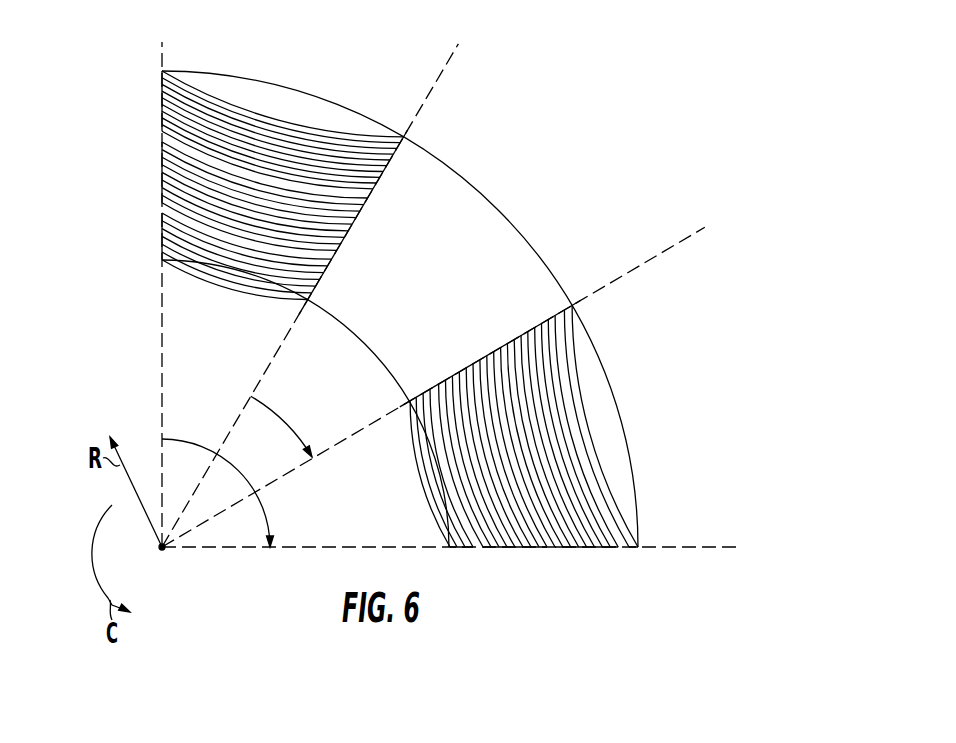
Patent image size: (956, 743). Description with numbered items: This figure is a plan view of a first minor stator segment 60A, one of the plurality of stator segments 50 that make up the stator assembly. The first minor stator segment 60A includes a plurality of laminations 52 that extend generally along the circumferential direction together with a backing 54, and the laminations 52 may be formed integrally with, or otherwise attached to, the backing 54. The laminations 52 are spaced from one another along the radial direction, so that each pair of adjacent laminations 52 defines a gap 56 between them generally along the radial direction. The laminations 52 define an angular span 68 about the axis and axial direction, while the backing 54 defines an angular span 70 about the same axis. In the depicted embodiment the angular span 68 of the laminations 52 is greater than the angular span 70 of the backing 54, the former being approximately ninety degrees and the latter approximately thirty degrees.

The stator segments 50 is at (370, 321).
The first minor stator segment 60A is at (623, 165).
The laminations 52 is at (258, 84).
The backing 54 is at (472, 188).
The gap 56 is at (213, 141).
The angular span of the plurality of laminations 68 is at (203, 447).
The angular span of the backing 70 is at (285, 420).